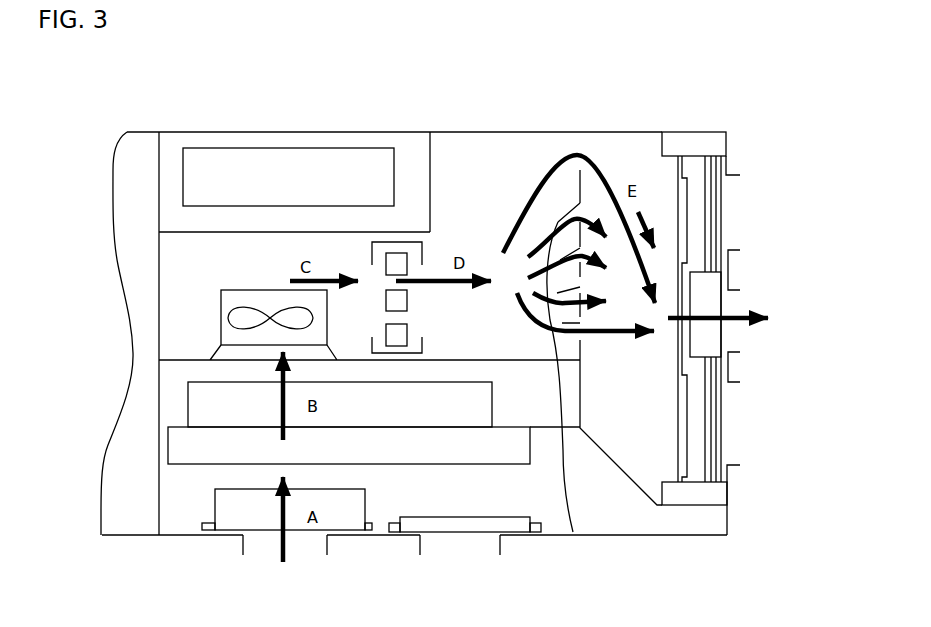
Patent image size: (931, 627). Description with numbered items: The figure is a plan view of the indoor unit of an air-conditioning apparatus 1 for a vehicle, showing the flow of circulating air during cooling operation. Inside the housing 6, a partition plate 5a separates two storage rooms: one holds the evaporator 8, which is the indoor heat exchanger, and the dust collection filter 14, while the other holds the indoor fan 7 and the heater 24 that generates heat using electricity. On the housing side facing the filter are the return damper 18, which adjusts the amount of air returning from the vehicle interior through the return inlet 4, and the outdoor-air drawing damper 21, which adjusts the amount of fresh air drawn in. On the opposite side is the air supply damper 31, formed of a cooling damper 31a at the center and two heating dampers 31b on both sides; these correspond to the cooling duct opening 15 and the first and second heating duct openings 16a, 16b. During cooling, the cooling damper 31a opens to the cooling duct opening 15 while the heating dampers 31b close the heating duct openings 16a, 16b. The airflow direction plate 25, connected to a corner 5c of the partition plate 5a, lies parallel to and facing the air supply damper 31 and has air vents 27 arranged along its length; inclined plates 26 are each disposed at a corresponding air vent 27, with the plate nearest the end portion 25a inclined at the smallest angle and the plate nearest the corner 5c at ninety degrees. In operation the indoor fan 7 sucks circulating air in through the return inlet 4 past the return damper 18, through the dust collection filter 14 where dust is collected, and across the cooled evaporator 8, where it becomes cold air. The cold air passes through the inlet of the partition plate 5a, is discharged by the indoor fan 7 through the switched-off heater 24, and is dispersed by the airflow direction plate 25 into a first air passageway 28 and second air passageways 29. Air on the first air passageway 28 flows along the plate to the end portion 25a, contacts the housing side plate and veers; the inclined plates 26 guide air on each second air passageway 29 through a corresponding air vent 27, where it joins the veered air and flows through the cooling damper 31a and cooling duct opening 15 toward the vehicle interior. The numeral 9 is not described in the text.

The air-conditioning apparatus 1 is at (111, 131).
The housing side wall 9 is at (110, 203).
The housing 6 is at (542, 148).
The indoor fan 7 is at (272, 298).
The heater 24 is at (367, 250).
The evaporator 8 is at (202, 410).
The dust collection filter 14 is at (175, 447).
The return damper 18 is at (240, 520).
The return inlet 4 is at (298, 547).
The partition plate 5a is at (440, 515).
The outdoor-air drawing damper 21 is at (467, 528).
The second air passageways 29 is at (573, 532).
The corner 5c is at (570, 363).
The first air passageway 28 is at (562, 222).
The inclined plates 26 is at (562, 210).
The end portion 25a is at (583, 200).
The airflow direction plate 25 is at (583, 205).
The air vents 27 is at (604, 192).
The air supply damper 31 is at (728, 147).
The cooling damper 31a is at (723, 282).
The heating dampers 31b is at (683, 205).
The first heating duct opening 16a is at (735, 218).
The second heating duct opening 16b is at (735, 395).
The cooling duct opening 15 is at (740, 302).